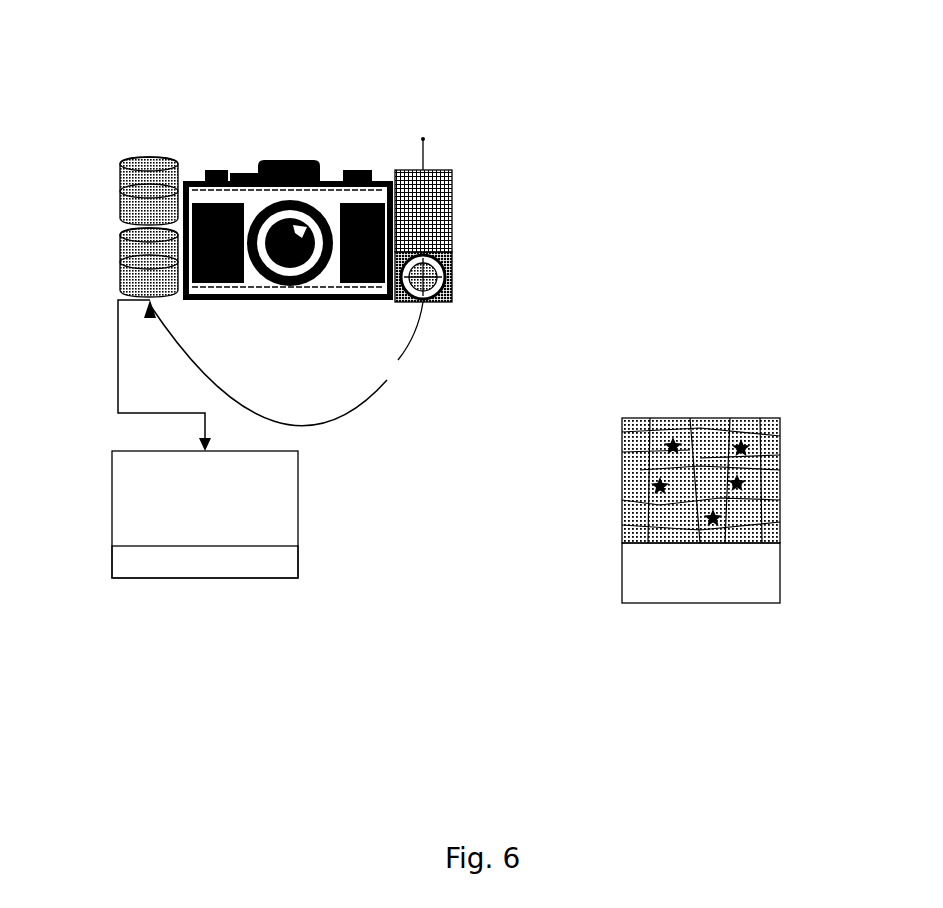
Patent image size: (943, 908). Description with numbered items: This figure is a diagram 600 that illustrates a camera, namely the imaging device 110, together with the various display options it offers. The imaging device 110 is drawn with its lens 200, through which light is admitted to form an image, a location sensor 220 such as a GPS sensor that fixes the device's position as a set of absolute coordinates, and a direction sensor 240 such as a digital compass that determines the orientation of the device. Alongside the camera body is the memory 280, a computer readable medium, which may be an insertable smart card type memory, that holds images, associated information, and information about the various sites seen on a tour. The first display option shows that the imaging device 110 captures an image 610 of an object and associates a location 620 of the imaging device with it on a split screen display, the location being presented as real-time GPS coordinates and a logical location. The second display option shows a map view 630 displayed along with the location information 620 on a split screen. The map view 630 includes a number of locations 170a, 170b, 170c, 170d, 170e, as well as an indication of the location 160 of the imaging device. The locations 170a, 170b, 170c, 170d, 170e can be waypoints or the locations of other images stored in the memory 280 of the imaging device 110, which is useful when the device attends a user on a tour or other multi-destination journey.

The imaging device 110 is at (220, 157).
The location of imaging device 160 is at (423, 357).
The location 170a is at (680, 458).
The location 170b is at (728, 452).
The location 170c is at (725, 470).
The location 170d is at (693, 530).
The location 170e is at (660, 485).
The lens 200 is at (293, 270).
The location sensor 220 is at (452, 197).
The direction sensor 240 is at (452, 272).
The memory 280 is at (112, 280).
The diagram 600 is at (738, 133).
The image 610 is at (130, 486).
The location of the imaging device 620 is at (130, 566).
The map view 630 is at (630, 418).